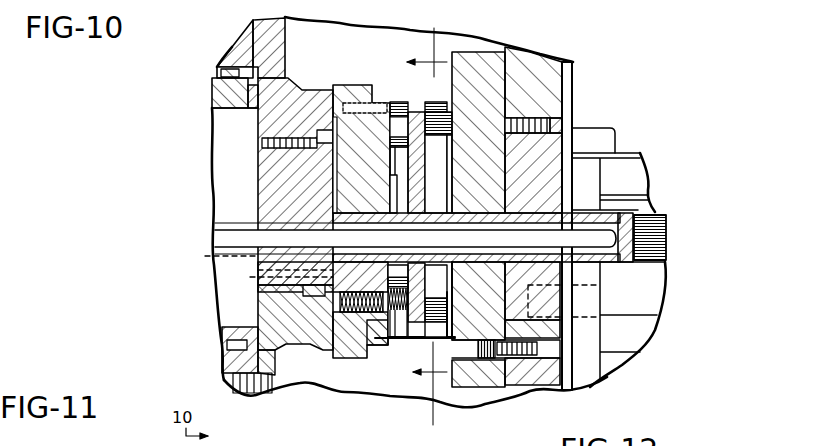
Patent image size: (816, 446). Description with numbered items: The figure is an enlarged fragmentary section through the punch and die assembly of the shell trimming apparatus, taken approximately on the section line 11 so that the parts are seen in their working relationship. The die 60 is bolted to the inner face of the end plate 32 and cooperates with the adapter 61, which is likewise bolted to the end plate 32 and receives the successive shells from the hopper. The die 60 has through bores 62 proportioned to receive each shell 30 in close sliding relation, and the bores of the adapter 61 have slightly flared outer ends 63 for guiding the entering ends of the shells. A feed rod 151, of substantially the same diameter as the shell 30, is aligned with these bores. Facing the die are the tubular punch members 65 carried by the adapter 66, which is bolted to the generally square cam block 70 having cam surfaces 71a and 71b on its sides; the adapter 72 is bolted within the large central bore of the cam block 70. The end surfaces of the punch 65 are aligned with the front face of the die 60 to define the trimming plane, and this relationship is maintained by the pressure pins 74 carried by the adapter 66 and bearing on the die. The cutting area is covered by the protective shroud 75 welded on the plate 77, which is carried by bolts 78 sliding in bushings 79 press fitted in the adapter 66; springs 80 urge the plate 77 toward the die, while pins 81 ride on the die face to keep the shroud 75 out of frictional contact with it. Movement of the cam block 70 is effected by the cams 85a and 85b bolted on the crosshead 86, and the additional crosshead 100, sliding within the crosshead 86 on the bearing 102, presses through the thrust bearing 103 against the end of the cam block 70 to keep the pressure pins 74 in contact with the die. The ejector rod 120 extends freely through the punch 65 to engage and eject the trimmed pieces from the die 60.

The cam 85a is at (262, 21).
The crosshead 86 is at (233, 67).
The bearing 102 is at (217, 77).
The additional crosshead 100 is at (212, 93).
The thrust bearing 103 is at (236, 108).
The adapter 72 is at (256, 181).
The adapter 66 is at (337, 187).
The punch member 65 is at (337, 218).
The cam surface 71a is at (315, 84).
The bolt 78 is at (262, 275).
The cam surface 71b is at (315, 368).
The cam block 70 is at (343, 347).
The spring 80 is at (393, 340).
The pressure pin 74 is at (403, 102).
The pin 81 is at (443, 110).
The protective shroud 75 is at (434, 103).
The plate 77 is at (425, 165).
The die 60 is at (487, 67).
The end plate 32 is at (540, 65).
The adapter 61 is at (556, 147).
The shell 30 is at (618, 218).
The through bore 62 is at (488, 213).
The flared outer end 63 is at (556, 260).
The ejector rod 120 is at (219, 241).
The bushing 79 is at (217, 256).
The feed rod 151 is at (663, 243).
The cam 85b is at (281, 376).
The section line 11 is at (428, 224).